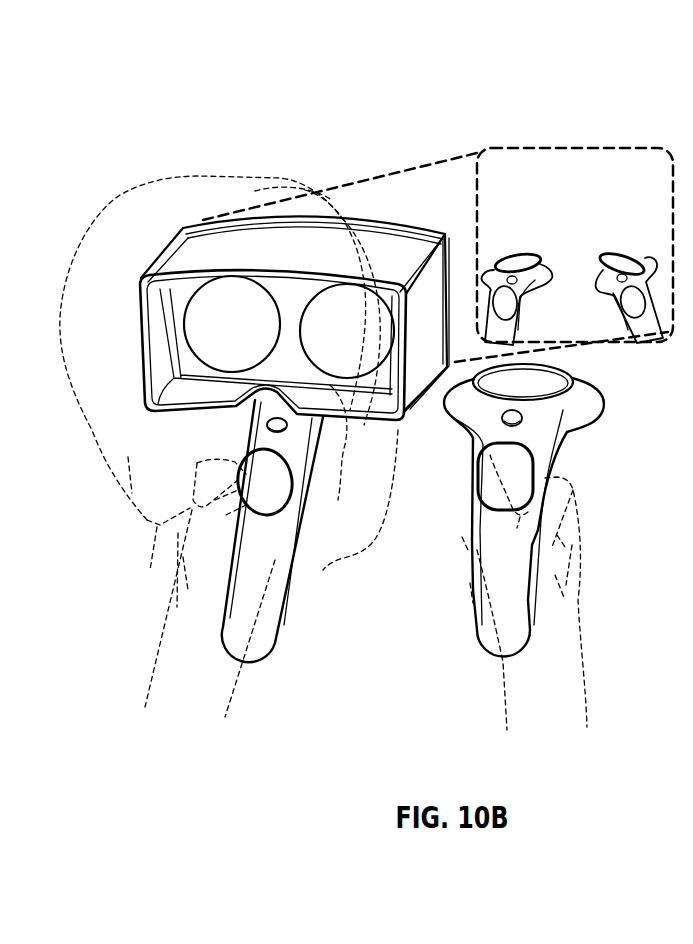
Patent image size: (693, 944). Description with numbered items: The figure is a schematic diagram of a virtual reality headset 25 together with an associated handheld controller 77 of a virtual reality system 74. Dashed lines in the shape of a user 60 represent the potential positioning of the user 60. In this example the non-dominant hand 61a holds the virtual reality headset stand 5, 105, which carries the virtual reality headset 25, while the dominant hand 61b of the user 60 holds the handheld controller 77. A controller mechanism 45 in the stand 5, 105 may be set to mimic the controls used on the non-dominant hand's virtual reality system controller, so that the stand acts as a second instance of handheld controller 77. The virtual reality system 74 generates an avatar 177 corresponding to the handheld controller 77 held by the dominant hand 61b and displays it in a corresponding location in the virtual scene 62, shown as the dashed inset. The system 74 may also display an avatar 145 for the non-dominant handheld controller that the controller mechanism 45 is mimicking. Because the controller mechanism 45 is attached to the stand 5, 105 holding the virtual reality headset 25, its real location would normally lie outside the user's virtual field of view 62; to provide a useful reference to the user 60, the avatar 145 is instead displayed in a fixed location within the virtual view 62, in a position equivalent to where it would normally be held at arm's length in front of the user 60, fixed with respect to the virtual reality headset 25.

The user 60 is at (119, 194).
The virtual reality system 74 is at (258, 126).
The virtual reality headset 25 is at (393, 222).
The virtual reality headset stand 5 is at (270, 531).
The virtual reality headset stand 105 is at (270, 531).
The controller mechanism 45 is at (258, 469).
The non-dominant hand 61a is at (232, 685).
The dominant hand 61b is at (582, 672).
The handheld controller 77 is at (566, 436).
The virtual scene 62 is at (544, 144).
The avatar 145 is at (518, 258).
The avatar 177 is at (618, 258).